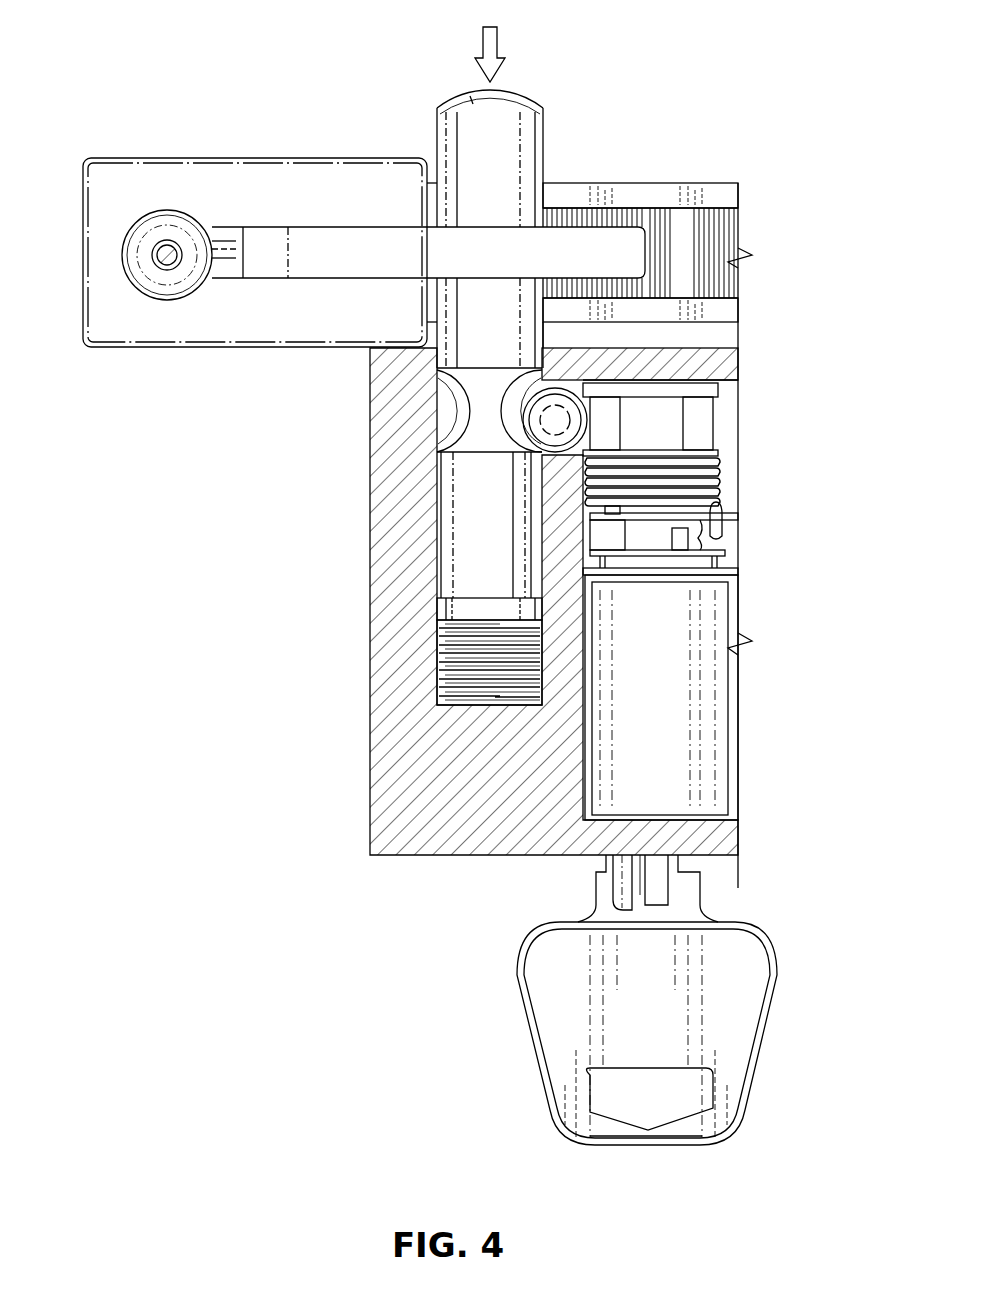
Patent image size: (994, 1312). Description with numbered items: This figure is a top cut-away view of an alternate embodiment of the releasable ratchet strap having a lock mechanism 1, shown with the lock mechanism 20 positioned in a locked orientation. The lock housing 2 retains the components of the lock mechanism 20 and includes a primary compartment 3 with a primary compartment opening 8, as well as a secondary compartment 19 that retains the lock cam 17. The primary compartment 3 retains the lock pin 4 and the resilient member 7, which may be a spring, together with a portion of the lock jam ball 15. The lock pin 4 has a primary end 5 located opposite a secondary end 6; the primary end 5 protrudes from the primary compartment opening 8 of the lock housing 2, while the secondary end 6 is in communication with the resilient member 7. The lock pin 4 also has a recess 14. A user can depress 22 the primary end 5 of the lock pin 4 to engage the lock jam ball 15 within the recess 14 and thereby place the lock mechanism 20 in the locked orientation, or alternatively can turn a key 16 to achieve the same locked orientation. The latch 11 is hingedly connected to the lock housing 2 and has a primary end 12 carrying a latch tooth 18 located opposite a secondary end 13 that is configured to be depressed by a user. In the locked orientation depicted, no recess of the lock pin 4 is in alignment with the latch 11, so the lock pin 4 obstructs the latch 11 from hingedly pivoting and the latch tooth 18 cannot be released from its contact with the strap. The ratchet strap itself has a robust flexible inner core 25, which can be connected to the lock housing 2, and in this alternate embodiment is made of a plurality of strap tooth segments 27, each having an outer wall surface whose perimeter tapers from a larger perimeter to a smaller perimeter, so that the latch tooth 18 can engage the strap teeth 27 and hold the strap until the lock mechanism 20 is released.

The releasable ratchet strap having a lock mechanism 1 is at (568, 96).
The lock housing 2 is at (370, 697).
The primary compartment 3 is at (440, 628).
The lock pin 4 is at (462, 130).
The primary end 5 is at (470, 98).
The secondary end 6 is at (443, 590).
The resilient member 7 is at (440, 668).
The primary compartment opening 8 is at (545, 180).
The latch 11 is at (375, 235).
The primary end 12 is at (262, 237).
The secondary end 13 is at (605, 232).
The recess 14 is at (465, 433).
The lock jam ball 15 is at (577, 383).
The key 16 is at (517, 1013).
The lock cam 17 is at (613, 427).
The latch tooth 18 is at (175, 228).
The secondary compartment 19 is at (727, 490).
The lock mechanism 20 is at (623, 543).
The depress 22 is at (480, 43).
The flexible inner core 25 is at (167, 268).
The strap teeth 27 is at (180, 297).